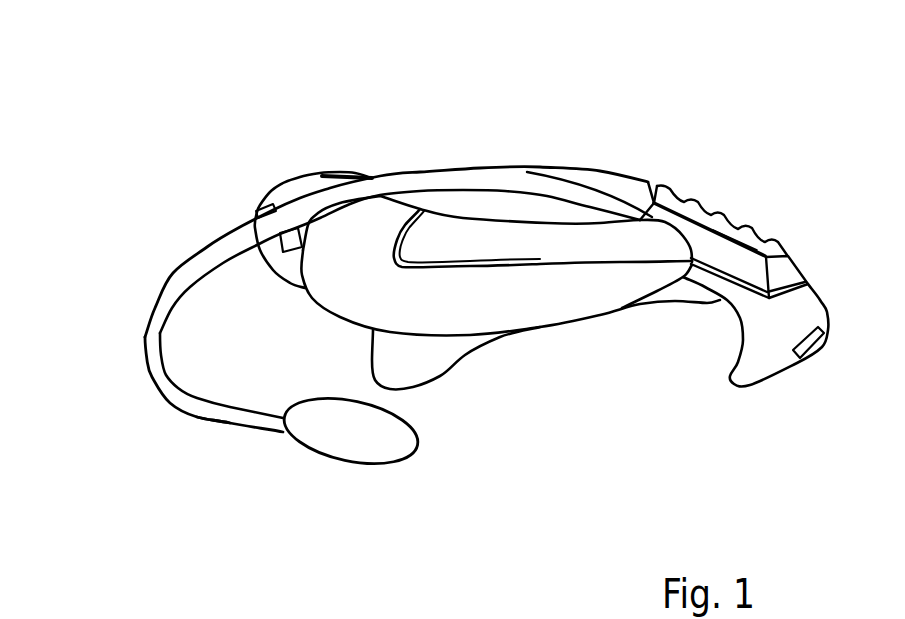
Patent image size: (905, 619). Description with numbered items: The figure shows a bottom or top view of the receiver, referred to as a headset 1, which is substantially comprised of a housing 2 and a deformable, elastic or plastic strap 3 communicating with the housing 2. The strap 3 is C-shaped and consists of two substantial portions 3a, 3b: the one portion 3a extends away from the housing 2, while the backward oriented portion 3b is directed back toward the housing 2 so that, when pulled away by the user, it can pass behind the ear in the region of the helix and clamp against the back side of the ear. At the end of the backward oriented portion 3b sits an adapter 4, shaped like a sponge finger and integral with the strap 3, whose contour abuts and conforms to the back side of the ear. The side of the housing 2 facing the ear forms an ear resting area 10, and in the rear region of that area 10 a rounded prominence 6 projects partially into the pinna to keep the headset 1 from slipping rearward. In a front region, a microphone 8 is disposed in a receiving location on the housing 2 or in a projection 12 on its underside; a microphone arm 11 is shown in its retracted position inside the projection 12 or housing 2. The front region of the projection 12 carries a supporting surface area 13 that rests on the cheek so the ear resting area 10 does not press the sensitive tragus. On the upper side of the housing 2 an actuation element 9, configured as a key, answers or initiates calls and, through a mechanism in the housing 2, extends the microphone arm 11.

The headset 1 is at (618, 130).
The housing 2 is at (435, 228).
The strap 3 is at (145, 327).
The portion of the strap 3a is at (220, 257).
The backward oriented portion of the strap 3b is at (228, 405).
The adapter 4 is at (387, 478).
The prominence 6 is at (420, 362).
The microphone 8 is at (701, 307).
The actuation element 9 is at (302, 190).
The ear resting area 10 is at (533, 338).
The microphone arm 11 is at (708, 220).
The projection 12 is at (794, 229).
The supporting surface area 13 is at (748, 368).